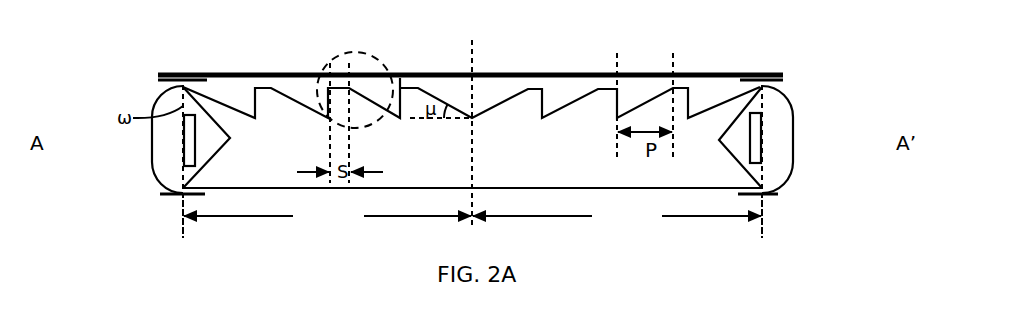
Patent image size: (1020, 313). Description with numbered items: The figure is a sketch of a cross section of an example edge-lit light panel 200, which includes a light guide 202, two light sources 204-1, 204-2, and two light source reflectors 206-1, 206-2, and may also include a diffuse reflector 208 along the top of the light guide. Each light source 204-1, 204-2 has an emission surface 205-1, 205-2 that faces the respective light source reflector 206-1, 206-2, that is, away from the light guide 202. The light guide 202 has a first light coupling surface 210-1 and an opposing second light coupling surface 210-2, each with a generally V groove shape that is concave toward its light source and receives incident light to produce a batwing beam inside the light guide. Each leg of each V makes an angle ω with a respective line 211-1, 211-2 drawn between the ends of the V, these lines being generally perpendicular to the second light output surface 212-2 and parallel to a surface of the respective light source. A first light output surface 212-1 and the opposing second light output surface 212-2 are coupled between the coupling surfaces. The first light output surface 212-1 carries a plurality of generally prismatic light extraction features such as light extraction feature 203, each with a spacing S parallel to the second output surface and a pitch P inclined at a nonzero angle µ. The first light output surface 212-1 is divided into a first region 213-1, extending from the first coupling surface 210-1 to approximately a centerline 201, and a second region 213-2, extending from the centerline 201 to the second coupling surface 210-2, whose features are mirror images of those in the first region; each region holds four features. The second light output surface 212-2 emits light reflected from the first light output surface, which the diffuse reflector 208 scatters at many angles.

The edge-lit light panel 200 is at (58, 30).
The centerline 201 is at (472, 62).
The light guide 202 is at (270, 174).
The light extraction feature 203 is at (355, 57).
The first light source 204-1 is at (176, 154).
The second light source 204-2 is at (774, 123).
The first emission surface 205-1 is at (183, 138).
The second emission surface 205-2 is at (762, 142).
The first light source reflector 206-1 is at (148, 100).
The second light source reflector 206-2 is at (776, 201).
The diffuse reflector 208 is at (275, 70).
The first light coupling surface 210-1 is at (262, 121).
The second light coupling surface 210-2 is at (738, 117).
The first line 211-1 is at (185, 228).
The second line 211-2 is at (762, 228).
The first light output surface 212-1 is at (572, 102).
The second light output surface 212-2 is at (387, 186).
The first region 213-1 is at (327, 216).
The second region 213-2 is at (617, 216).